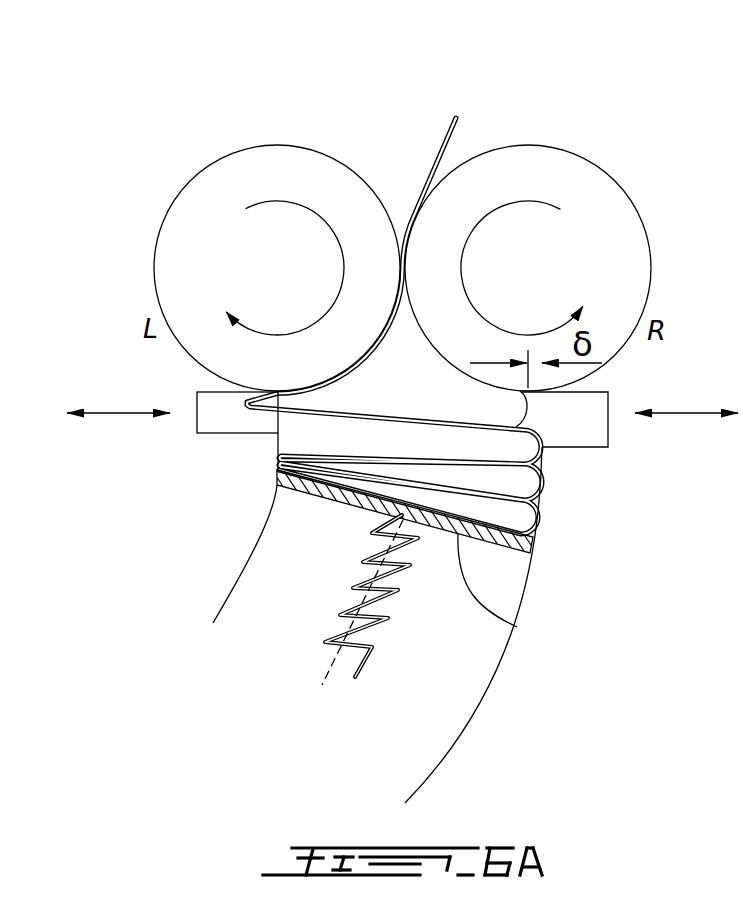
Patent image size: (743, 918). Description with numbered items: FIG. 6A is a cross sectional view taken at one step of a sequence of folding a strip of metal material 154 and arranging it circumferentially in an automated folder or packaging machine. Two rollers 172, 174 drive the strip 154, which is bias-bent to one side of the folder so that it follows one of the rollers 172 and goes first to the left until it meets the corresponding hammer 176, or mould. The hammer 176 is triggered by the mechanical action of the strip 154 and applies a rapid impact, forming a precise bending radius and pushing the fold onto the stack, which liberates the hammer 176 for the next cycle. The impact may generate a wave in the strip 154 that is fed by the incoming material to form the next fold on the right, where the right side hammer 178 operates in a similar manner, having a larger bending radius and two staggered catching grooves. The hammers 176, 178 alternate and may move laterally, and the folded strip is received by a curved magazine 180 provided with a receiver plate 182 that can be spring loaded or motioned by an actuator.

The web 154 is at (434, 142).
The roller 172 is at (193, 275).
The roller 174 is at (607, 223).
The hammer 176 is at (207, 423).
The right side hammer 178 is at (587, 430).
The curved magazine 180 is at (533, 580).
The receiver plate 182 is at (517, 627).